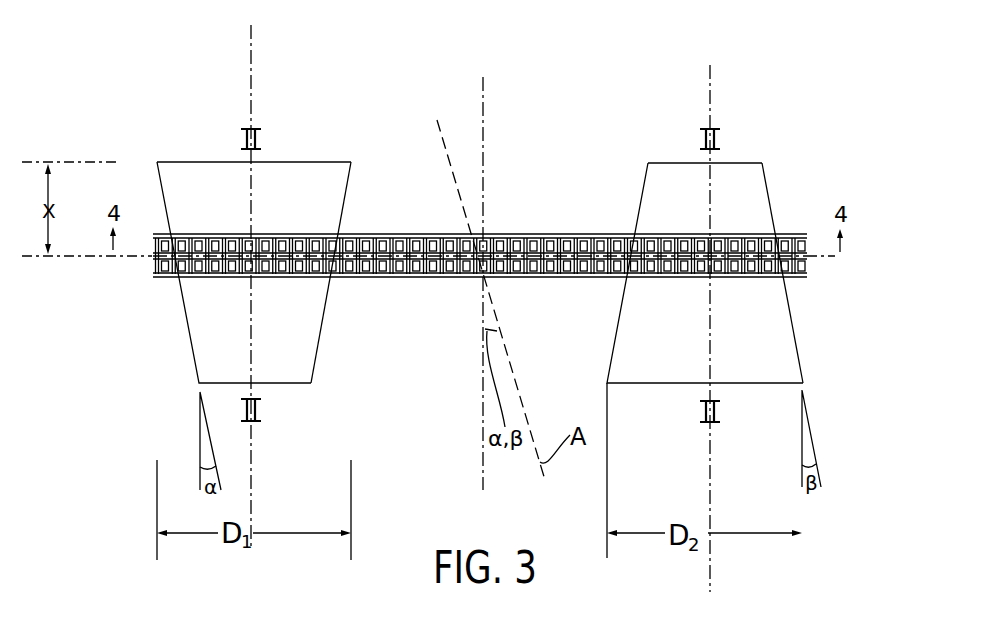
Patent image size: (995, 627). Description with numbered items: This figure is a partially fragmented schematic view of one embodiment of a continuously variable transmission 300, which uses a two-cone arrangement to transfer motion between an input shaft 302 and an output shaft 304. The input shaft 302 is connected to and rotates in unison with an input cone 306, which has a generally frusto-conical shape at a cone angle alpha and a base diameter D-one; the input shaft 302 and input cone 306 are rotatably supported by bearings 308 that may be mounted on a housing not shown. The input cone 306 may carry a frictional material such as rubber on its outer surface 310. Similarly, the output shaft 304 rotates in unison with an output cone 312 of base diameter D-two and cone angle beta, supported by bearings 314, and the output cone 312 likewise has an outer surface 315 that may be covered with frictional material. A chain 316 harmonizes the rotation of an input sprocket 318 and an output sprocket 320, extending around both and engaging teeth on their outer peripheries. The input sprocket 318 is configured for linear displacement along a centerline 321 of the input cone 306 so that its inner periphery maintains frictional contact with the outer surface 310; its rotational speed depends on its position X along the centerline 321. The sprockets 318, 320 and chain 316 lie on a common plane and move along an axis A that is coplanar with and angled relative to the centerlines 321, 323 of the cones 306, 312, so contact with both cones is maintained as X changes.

The continuously variable transmission 300 is at (843, 437).
The input shaft 302 is at (252, 125).
The output shaft 304 is at (710, 118).
The input cone 306 is at (337, 185).
The bearings 308 is at (262, 140).
The outer surface 310 is at (207, 363).
The output cone 312 is at (760, 195).
The bearings 314 is at (718, 140).
The outer surface 315 is at (783, 367).
The chain 316 is at (433, 278).
The input sprocket 318 is at (180, 277).
The output sprocket 320 is at (722, 278).
The centerline 321 is at (252, 78).
The centerline 323 is at (712, 552).